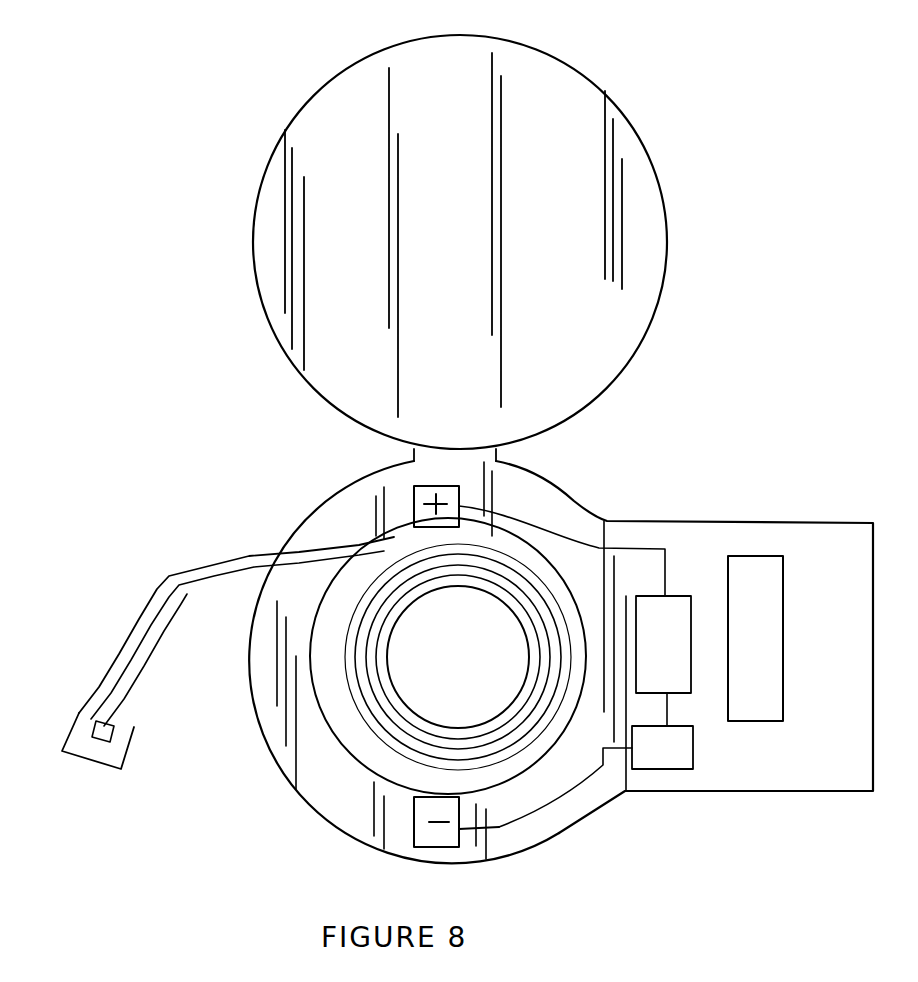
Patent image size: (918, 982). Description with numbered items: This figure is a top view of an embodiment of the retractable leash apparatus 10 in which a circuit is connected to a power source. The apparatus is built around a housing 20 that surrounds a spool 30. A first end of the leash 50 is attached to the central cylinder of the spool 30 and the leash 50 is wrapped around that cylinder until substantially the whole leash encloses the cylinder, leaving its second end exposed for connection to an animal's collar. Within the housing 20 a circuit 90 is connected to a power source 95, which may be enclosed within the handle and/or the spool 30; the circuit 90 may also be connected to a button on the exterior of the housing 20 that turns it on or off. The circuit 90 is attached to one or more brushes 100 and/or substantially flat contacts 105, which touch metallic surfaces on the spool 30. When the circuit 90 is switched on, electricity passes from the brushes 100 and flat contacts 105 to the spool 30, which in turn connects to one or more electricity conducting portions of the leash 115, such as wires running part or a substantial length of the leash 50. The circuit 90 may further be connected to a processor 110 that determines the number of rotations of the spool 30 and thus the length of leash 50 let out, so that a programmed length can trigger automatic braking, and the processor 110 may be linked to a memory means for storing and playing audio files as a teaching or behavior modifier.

The retractable leash apparatus 10 is at (176, 131).
The housing 20 is at (573, 530).
The spool 30 is at (370, 762).
The leash 50 is at (255, 568).
The circuit 90 is at (637, 550).
The power source 95 is at (676, 669).
The brushes 100 is at (415, 505).
The flat contacts 105 is at (420, 800).
The processor 110 is at (677, 766).
The electricity conducting portion of the leash 115 is at (98, 727).